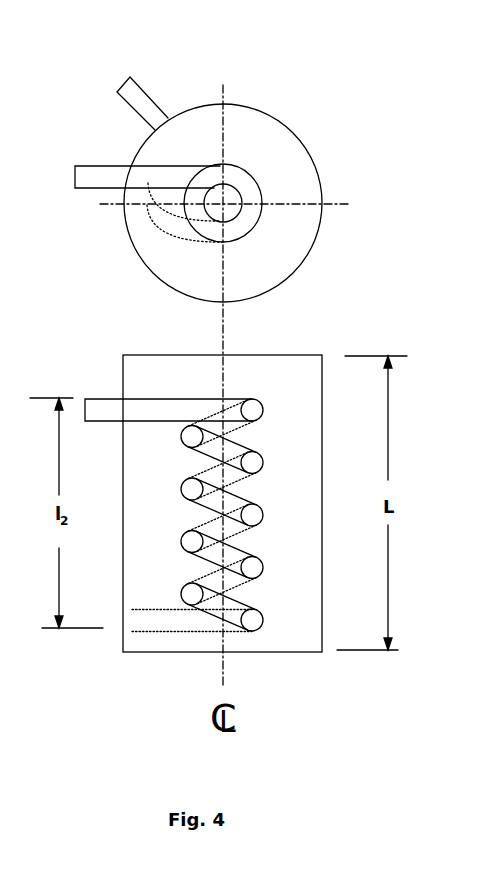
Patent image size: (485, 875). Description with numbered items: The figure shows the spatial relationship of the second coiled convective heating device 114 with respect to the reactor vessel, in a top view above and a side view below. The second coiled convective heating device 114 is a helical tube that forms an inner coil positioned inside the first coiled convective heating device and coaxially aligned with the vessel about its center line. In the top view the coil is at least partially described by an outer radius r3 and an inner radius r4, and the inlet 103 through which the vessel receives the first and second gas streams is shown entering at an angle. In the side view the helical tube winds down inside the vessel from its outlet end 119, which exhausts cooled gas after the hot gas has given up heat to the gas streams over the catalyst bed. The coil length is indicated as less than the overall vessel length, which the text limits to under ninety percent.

The inlet 103 is at (130, 94).
The second coiled convective heating device 114 is at (313, 712).
The outlet end 119 is at (101, 395).
The outer radius r3 is at (250, 169).
The inner radius r4 is at (246, 214).